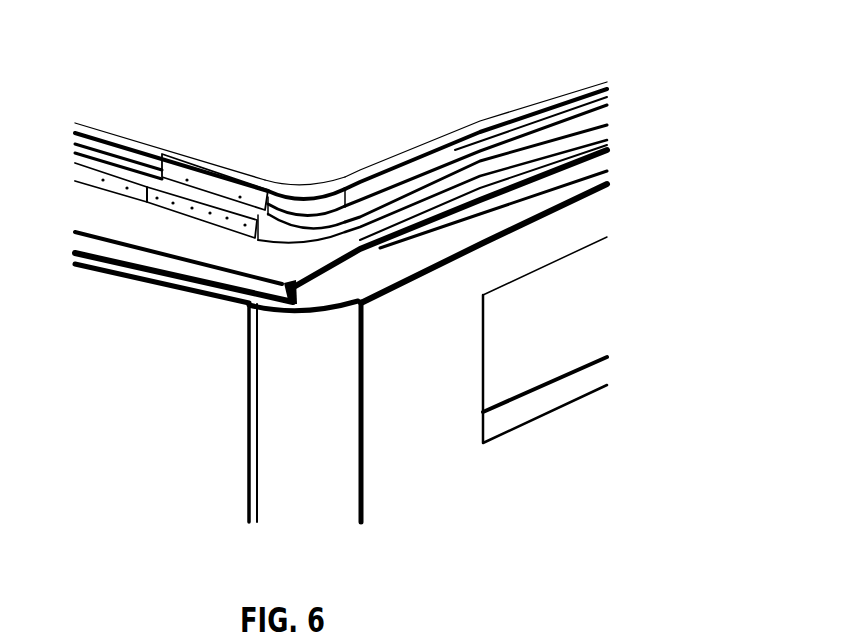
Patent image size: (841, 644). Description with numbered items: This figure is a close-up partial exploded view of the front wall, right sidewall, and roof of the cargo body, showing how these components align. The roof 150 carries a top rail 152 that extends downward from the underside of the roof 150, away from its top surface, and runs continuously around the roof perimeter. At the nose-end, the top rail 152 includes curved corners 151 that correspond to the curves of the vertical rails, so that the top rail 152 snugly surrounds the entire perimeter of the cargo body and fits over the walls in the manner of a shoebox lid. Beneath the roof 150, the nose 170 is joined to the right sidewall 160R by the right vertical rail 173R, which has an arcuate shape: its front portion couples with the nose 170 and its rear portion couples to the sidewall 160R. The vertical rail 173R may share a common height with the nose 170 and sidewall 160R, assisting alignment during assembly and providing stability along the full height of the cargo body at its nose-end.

The roof 150 is at (371, 121).
The curved corners 151 is at (303, 190).
The top rail 152 is at (605, 102).
The right sidewall 160R is at (108, 485).
The nose 170 is at (583, 448).
The right vertical rail 173R is at (288, 470).